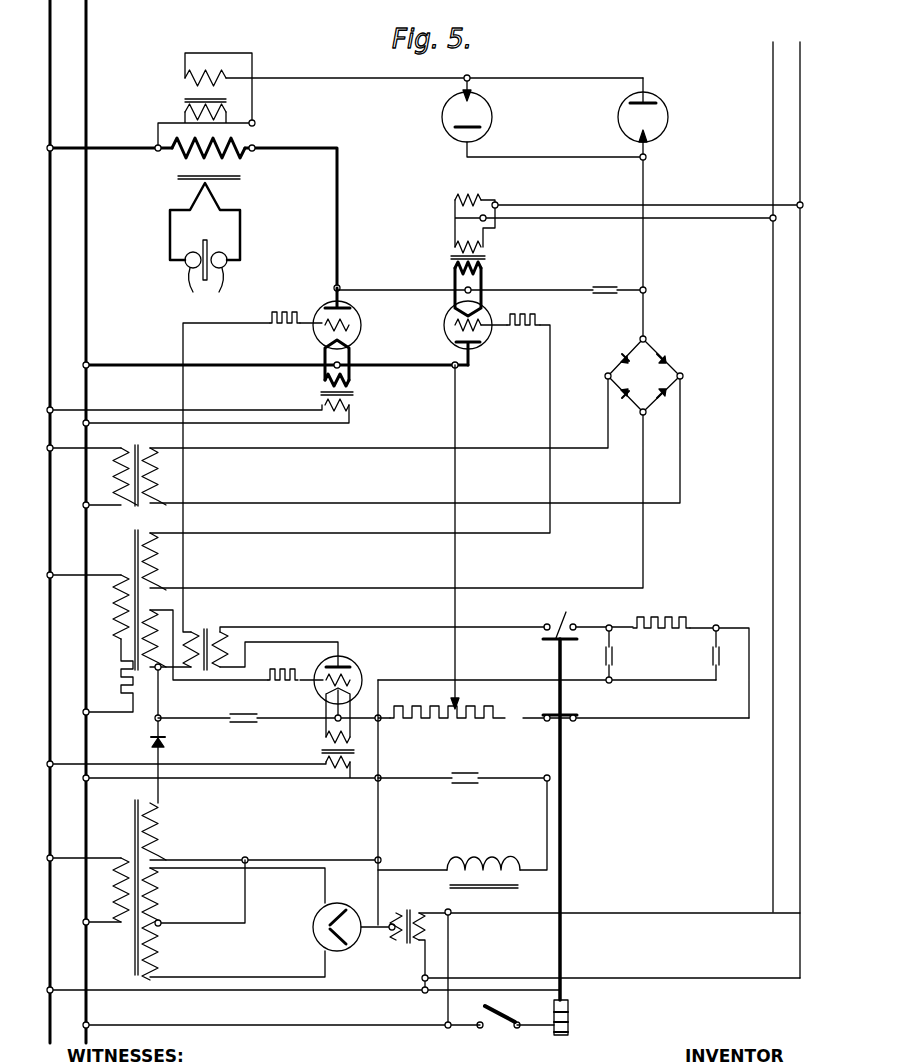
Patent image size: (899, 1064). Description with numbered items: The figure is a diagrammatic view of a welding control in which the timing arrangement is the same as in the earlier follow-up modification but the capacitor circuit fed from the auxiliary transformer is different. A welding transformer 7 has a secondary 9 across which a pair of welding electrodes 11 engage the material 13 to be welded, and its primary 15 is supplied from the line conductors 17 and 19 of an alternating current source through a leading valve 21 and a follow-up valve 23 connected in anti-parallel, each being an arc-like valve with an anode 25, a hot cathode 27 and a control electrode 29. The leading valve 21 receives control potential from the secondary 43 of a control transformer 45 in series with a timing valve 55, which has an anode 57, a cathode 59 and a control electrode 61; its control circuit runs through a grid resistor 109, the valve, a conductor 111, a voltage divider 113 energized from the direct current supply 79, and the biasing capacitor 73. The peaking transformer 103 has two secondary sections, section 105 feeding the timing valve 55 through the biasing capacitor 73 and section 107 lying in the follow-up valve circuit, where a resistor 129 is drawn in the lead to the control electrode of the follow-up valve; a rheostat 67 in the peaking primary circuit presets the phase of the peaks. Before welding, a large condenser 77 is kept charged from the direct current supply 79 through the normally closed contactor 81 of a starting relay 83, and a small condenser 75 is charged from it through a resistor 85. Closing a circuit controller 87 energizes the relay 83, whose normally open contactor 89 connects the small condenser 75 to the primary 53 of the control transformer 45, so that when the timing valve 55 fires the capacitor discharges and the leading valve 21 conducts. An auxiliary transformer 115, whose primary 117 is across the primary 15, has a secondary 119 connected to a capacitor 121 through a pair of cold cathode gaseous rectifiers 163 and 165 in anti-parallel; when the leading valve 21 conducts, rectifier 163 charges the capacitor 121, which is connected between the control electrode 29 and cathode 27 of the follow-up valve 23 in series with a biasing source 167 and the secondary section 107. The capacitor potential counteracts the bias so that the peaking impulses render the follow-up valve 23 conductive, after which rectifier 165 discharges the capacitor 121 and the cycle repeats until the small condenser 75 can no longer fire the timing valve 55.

The welding transformer 7 is at (250, 173).
The secondary 9 is at (222, 205).
The welding electrodes 11 is at (206, 284).
The material 13 is at (206, 249).
The primary 15 is at (208, 143).
The line conductor 17 is at (88, 258).
The line conductor 19 is at (52, 258).
The leading valve 21 is at (362, 325).
The follow-up valve 23 is at (490, 315).
The anode 25 is at (350, 306).
The hot cathode 27 is at (322, 347).
The control electrode 29 is at (352, 332).
The secondary 43 is at (191, 668).
The control transformer 45 is at (200, 615).
The primary 53 is at (225, 633).
The timing valve 55 is at (352, 664).
The anode 57 is at (320, 660).
The cathode 59 is at (320, 690).
The control electrode 61 is at (352, 678).
The rheostat 67 is at (112, 700).
The biasing capacitor 73 is at (240, 725).
The small condenser 75 is at (614, 652).
The large condenser 77 is at (711, 650).
The direct current supply 79 is at (457, 811).
The normally closed contactor 81 is at (578, 712).
The starting relay 83 is at (597, 1013).
The resistor 85 is at (670, 615).
The circuit controller 87 is at (500, 1027).
The normally open contactor 89 is at (560, 618).
The peaking transformer 103 is at (126, 526).
The secondary section 105 is at (152, 612).
The secondary section 107 is at (158, 566).
The grid resistor 109 is at (285, 312).
The conductor 111 is at (457, 420).
The voltage divider 113 is at (520, 722).
The auxiliary transformer 115 is at (138, 111).
The primary 117 is at (226, 112).
The secondary 119 is at (206, 71).
The capacitor 121 is at (593, 296).
The resistor 129 is at (540, 314).
The gaseous rectifier 163 is at (668, 112).
The gaseous rectifier 165 is at (442, 115).
The biasing source 167 is at (631, 385).